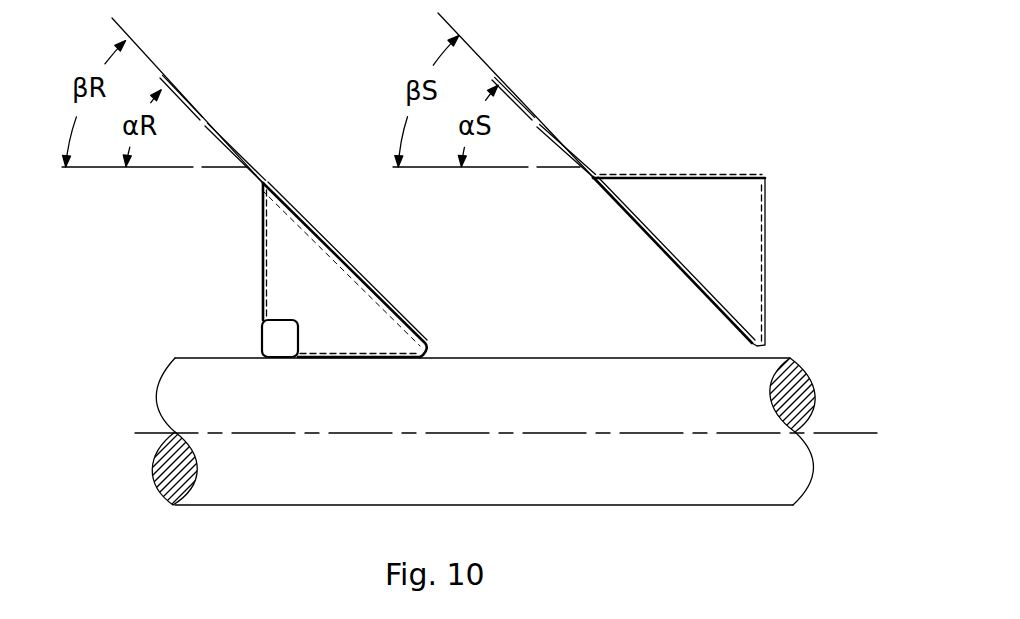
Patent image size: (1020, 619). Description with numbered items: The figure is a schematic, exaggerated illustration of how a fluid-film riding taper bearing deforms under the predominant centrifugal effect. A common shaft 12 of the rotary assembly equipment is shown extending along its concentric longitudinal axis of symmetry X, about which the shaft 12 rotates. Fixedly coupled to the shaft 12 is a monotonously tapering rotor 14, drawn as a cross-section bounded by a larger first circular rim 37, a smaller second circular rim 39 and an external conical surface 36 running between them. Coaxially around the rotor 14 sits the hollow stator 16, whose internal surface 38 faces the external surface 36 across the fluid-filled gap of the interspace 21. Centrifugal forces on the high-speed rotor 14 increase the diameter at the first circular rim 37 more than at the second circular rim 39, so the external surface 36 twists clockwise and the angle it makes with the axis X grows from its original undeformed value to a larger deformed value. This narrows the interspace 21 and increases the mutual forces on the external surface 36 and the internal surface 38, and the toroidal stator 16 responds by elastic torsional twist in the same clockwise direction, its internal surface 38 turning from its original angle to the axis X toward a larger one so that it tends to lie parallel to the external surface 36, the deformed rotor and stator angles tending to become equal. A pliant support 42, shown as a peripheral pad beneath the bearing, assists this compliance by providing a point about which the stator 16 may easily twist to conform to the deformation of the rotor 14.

The shaft 12 is at (180, 395).
The axis of symmetry X is at (147, 433).
The rotor 14 is at (329, 303).
The stator 16 is at (655, 261).
The interspace 21 is at (516, 287).
The external surface 36 is at (318, 232).
The first circular rim 37 is at (262, 185).
The internal surface 38 is at (620, 208).
The second circular rim 39 is at (420, 355).
The pliant support 42 is at (268, 352).